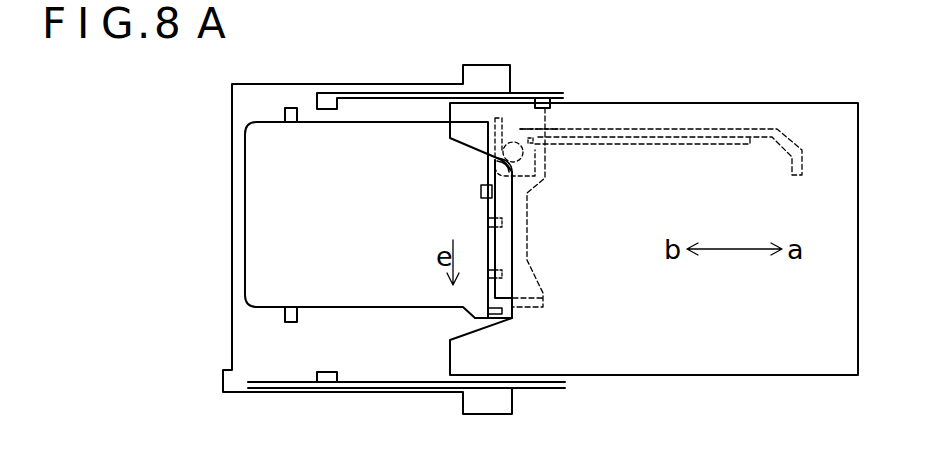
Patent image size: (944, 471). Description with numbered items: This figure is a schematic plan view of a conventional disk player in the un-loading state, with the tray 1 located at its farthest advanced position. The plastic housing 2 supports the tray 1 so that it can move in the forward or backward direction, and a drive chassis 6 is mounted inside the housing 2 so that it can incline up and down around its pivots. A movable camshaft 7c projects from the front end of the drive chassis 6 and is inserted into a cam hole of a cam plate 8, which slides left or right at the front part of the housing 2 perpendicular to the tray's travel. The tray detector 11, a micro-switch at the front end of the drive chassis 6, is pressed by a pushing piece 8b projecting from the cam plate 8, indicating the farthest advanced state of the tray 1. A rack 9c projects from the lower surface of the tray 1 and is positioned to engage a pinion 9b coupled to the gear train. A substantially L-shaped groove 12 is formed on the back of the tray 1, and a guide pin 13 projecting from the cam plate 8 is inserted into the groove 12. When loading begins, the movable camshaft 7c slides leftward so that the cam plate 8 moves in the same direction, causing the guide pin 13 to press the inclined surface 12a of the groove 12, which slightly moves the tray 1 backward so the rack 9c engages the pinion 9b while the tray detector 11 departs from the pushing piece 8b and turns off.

The tray 1 is at (818, 364).
The housing 2 is at (232, 345).
The drive chassis 6 is at (351, 302).
The movable camshaft 7c is at (491, 262).
The cam plate 8 is at (543, 298).
The pushing piece 8b is at (494, 201).
The pinion 9b is at (550, 163).
The rack 9c is at (660, 144).
The tray detector 11 is at (480, 188).
The groove 12 is at (752, 128).
The inclined surface 12a is at (560, 128).
The guide pin 13 is at (538, 98).